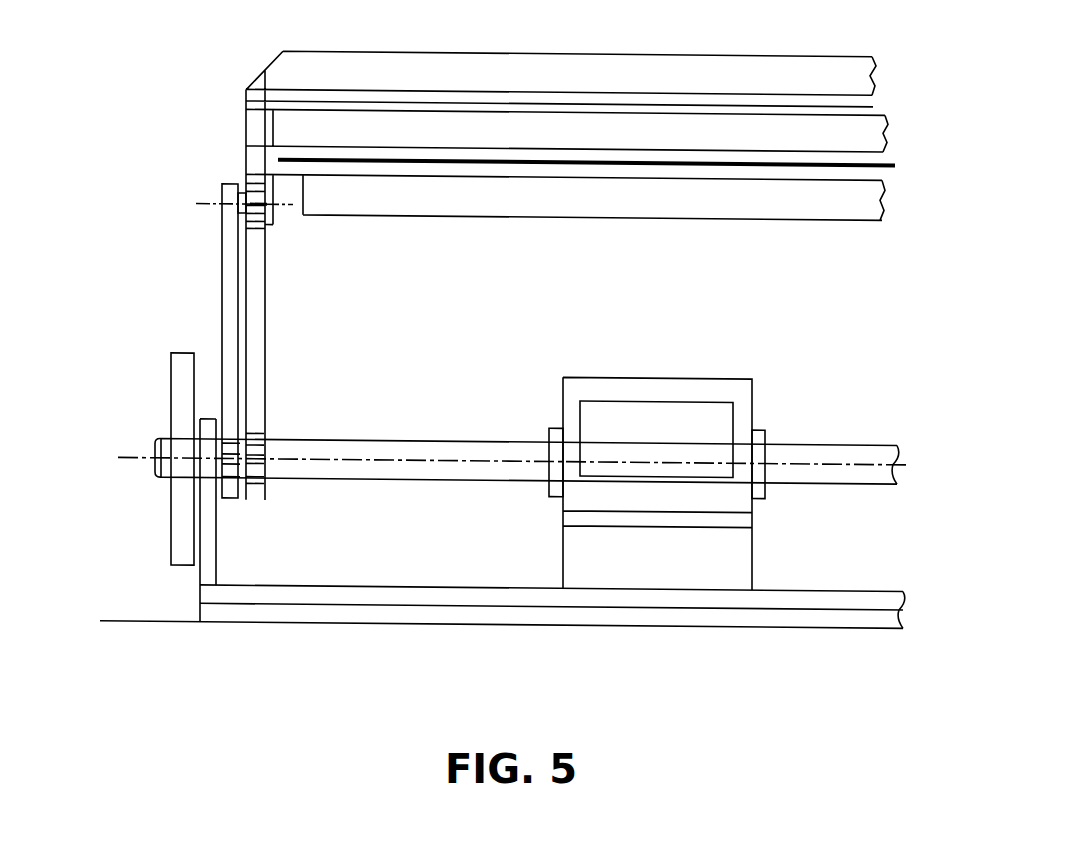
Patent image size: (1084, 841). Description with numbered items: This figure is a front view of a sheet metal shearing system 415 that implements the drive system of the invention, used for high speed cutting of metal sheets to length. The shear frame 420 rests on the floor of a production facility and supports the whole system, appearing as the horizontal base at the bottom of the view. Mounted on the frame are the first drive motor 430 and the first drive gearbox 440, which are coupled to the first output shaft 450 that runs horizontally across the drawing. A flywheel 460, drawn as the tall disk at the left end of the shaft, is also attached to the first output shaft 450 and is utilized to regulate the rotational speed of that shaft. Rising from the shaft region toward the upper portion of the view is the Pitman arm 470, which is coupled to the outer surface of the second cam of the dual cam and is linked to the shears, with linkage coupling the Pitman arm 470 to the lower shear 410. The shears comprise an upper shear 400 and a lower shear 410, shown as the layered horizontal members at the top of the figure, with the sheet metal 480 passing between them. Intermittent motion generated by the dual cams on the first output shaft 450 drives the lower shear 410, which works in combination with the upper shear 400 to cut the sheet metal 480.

The shearing system 415 is at (195, 155).
The upper shear 400 is at (675, 132).
The sheet metal 480 is at (752, 161).
The lower shear 410 is at (855, 195).
The Pitman arm 470 is at (222, 283).
The flywheel 460 is at (169, 506).
The first output shaft 450 is at (420, 479).
The first drive gearbox 440 is at (563, 372).
The first drive motor 430 is at (562, 397).
The shear frame 420 is at (327, 622).